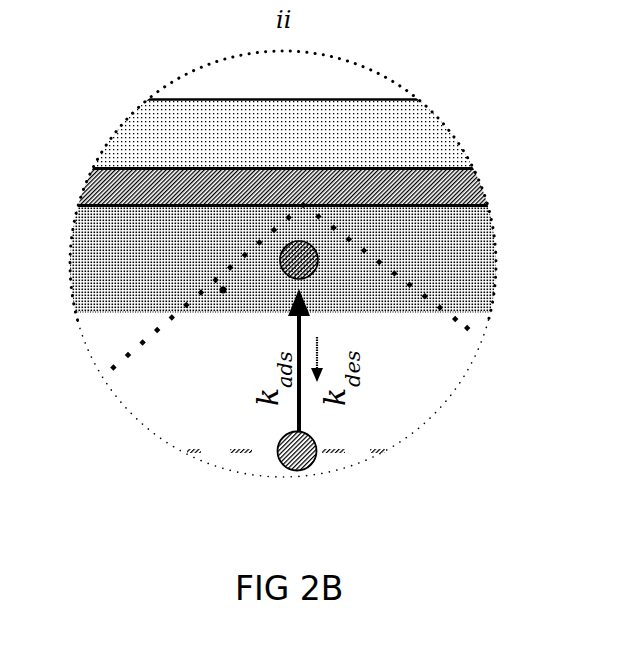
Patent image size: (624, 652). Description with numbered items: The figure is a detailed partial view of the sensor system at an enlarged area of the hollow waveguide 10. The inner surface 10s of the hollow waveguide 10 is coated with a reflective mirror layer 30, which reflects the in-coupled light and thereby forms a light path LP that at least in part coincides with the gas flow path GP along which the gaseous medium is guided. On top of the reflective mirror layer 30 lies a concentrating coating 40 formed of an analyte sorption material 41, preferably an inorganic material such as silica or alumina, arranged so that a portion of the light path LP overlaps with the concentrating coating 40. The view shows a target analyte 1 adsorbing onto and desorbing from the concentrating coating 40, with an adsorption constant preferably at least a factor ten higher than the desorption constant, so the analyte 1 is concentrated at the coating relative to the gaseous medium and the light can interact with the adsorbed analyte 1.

The hollow waveguide 10 is at (285, 133).
The reflective mirror layer 30 is at (285, 187).
The concentrating coating 40 is at (285, 259).
The analyte sorption material 41 is at (223, 290).
The inner surface 10s is at (391, 397).
The target analyte 1 is at (323, 462).
The light path LP is at (157, 326).
The gas flow path GP is at (205, 452).